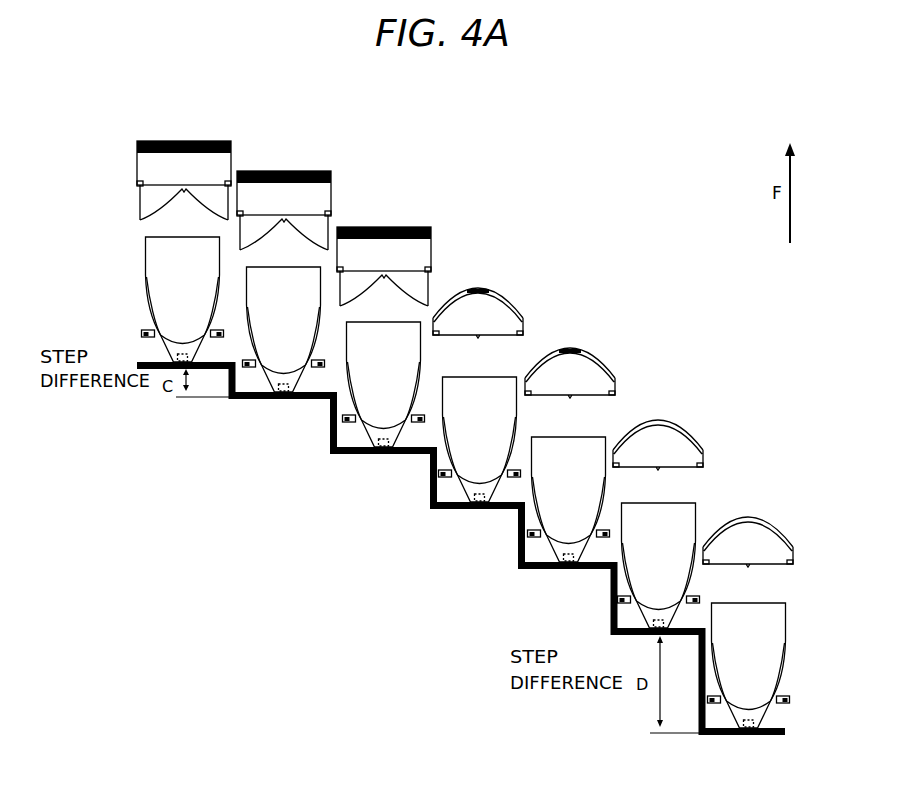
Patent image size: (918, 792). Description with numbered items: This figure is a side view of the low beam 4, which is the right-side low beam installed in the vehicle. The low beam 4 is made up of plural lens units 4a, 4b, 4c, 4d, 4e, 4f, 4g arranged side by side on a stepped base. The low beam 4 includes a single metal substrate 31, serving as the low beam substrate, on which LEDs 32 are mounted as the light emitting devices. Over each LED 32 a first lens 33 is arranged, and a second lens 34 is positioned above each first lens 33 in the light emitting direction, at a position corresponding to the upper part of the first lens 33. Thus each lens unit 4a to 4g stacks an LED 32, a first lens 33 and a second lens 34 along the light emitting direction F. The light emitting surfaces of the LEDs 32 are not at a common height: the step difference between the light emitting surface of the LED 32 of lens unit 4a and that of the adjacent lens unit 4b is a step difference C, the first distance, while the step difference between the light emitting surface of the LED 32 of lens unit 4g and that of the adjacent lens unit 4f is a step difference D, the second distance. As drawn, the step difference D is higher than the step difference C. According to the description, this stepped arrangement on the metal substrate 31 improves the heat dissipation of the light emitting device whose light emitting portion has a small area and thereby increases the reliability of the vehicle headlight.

The low beam 4 is at (529, 190).
The lens unit 4a is at (183, 140).
The lens unit 4b is at (283, 170).
The lens unit 4c is at (392, 226).
The lens unit 4d is at (478, 287).
The lens unit 4e is at (568, 346).
The lens unit 4f is at (658, 418).
The lens unit 4g is at (748, 514).
The metal substrate 31 is at (790, 733).
The LED 32 is at (170, 360).
The first lens 33 is at (785, 643).
The second lens 34 is at (780, 525).